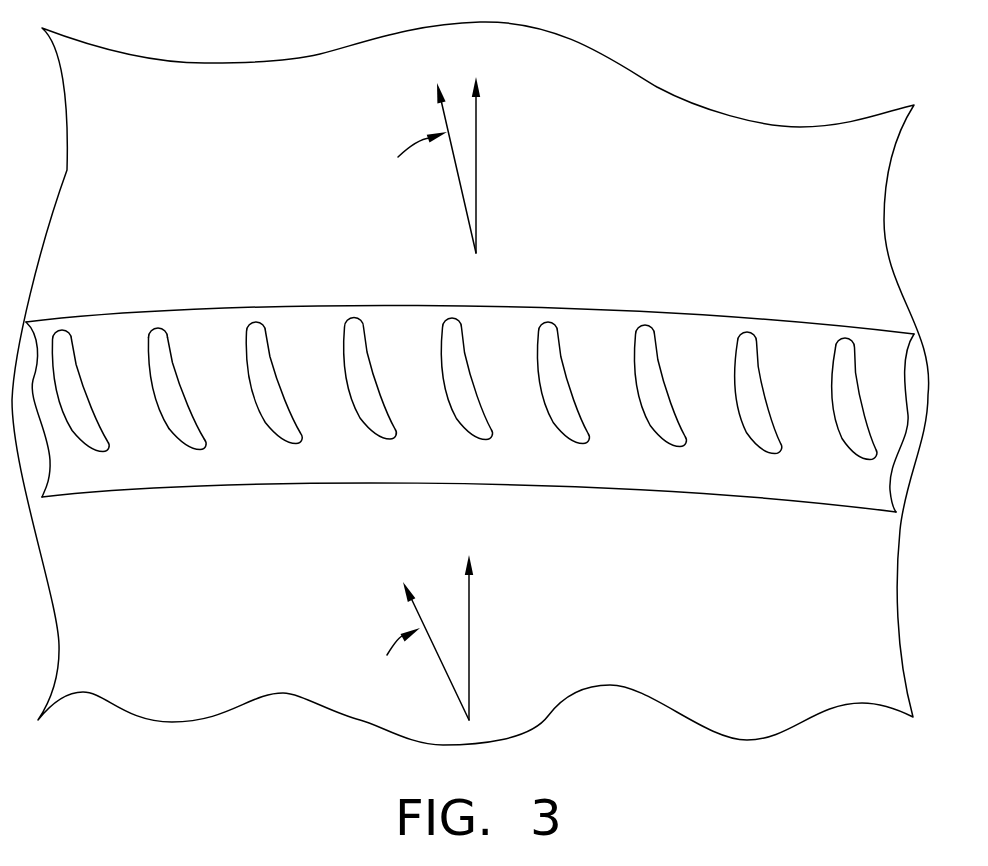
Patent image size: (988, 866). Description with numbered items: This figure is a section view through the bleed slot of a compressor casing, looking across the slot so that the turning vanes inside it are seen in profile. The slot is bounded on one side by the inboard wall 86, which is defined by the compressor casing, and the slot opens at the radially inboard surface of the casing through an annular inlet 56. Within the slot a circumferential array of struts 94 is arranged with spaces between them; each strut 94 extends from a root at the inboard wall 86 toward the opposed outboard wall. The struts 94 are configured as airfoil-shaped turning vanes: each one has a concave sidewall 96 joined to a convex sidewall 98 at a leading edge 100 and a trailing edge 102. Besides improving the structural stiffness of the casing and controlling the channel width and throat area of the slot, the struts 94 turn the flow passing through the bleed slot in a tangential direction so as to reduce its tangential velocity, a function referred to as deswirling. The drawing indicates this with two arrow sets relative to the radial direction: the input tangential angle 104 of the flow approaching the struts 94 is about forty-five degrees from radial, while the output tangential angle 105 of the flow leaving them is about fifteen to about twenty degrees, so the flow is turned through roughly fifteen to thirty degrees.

The annular inlet 56 is at (804, 516).
The inboard wall 86 is at (830, 477).
The struts 94 is at (173, 452).
The concave sidewall 96 is at (177, 368).
The convex sidewall 98 is at (149, 356).
The leading edge 100 is at (203, 446).
The trailing edge 102 is at (158, 327).
The input tangential angle 104 is at (492, 617).
The output tangential angle 105 is at (495, 129).